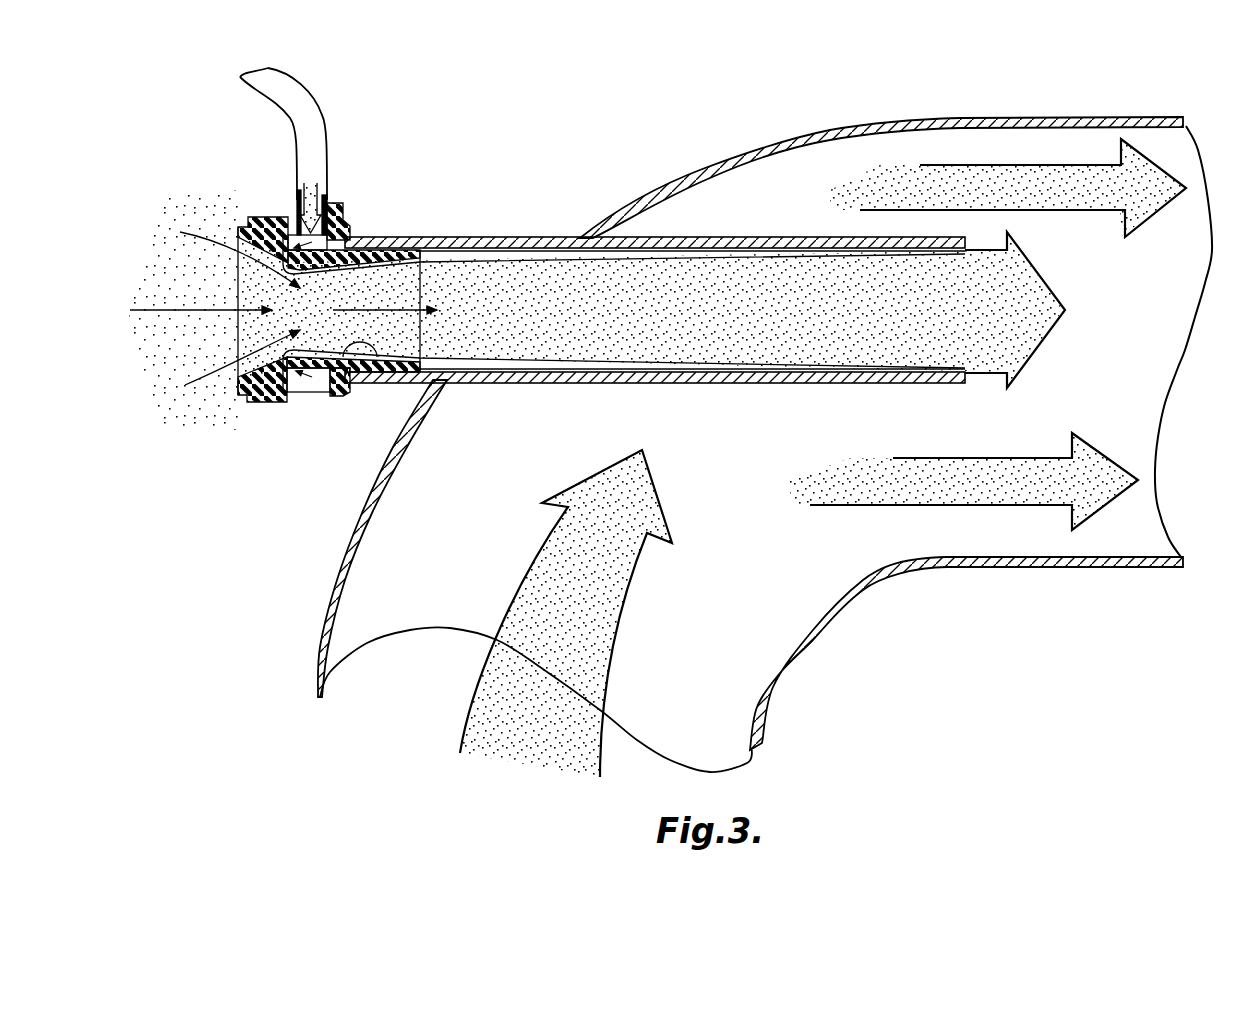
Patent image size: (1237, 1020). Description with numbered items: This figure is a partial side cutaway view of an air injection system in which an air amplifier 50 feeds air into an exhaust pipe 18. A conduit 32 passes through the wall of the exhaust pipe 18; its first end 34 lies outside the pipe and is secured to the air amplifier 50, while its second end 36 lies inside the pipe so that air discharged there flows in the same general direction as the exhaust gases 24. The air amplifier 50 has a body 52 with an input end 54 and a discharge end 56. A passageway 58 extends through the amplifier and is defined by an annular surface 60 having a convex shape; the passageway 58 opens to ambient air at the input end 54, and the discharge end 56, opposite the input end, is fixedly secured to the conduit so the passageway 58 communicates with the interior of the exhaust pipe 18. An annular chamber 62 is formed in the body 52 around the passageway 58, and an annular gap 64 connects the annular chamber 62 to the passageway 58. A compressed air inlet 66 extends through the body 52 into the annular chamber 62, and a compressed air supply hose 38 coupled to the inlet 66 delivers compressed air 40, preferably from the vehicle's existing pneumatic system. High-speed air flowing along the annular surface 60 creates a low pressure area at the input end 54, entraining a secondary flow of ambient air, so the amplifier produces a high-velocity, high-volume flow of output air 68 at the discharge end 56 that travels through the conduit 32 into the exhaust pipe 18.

The exhaust pipe 18 is at (767, 140).
The exhaust gases 24 is at (1067, 210).
The conduit 32 is at (742, 235).
The first end 34 is at (395, 237).
The second end 36 is at (946, 385).
The compressed air supply hose 38 is at (322, 108).
The compressed air 40 is at (318, 200).
The air amplifier 50 is at (237, 180).
The body 52 is at (270, 402).
The input end 54 is at (280, 326).
The discharge end 56 is at (420, 250).
The passageway 58 is at (342, 315).
The annular surface 60 is at (373, 375).
The annular chamber 62 is at (333, 245).
The annular gap 64 is at (298, 248).
The compressed air inlet 66 is at (296, 238).
The output air 68 is at (1055, 327).